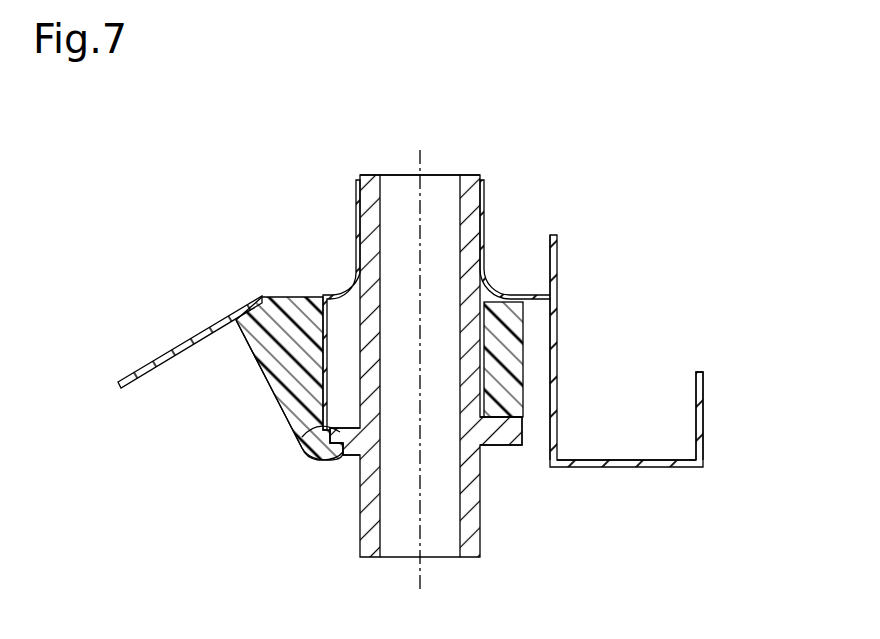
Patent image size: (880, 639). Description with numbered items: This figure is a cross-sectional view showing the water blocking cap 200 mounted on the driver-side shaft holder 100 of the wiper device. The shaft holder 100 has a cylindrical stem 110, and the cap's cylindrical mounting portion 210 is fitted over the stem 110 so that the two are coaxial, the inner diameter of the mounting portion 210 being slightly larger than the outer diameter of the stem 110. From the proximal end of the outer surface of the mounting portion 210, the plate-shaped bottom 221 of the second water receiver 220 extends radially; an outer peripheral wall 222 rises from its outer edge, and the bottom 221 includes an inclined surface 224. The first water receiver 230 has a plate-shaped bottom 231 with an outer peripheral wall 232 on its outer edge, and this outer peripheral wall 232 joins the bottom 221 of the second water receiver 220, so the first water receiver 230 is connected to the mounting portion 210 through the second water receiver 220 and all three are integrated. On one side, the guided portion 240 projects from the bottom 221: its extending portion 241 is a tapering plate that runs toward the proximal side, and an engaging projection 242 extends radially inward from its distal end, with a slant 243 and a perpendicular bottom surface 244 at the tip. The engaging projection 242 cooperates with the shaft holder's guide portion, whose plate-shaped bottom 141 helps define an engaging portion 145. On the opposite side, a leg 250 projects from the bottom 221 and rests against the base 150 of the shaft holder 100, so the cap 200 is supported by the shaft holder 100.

The driver-side shaft holder 100 is at (375, 161).
The stem 110 is at (471, 175).
The bottom 141 is at (332, 433).
The engaging portion 145 is at (343, 456).
The base 150 is at (506, 447).
The water blocking cap 200 is at (158, 326).
The mounting portion 210 is at (489, 218).
The second water receiver 220 is at (557, 245).
The bottom 221 is at (292, 296).
The outer peripheral wall 222 is at (549, 280).
The inclined surface 224 is at (152, 358).
The first water receiver 230 is at (704, 394).
The bottom 231 is at (628, 460).
The outer peripheral wall 232 is at (563, 338).
The guided portion 240 is at (268, 385).
The extending portion 241 is at (272, 350).
The engaging projection 242 is at (315, 455).
The slant 243 is at (330, 461).
The bottom surface 244 is at (316, 462).
The leg 250 is at (523, 388).